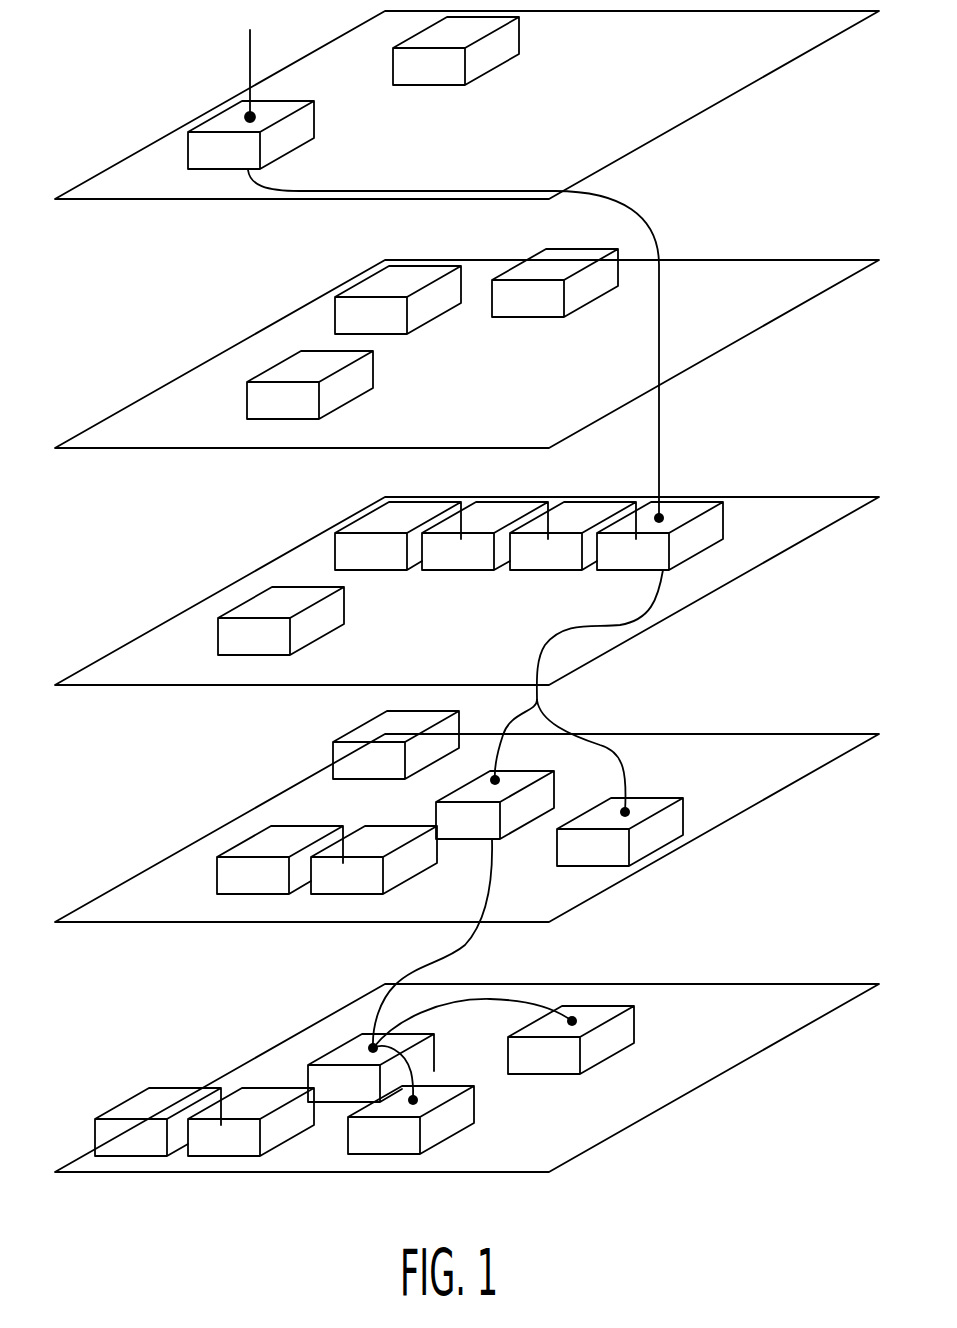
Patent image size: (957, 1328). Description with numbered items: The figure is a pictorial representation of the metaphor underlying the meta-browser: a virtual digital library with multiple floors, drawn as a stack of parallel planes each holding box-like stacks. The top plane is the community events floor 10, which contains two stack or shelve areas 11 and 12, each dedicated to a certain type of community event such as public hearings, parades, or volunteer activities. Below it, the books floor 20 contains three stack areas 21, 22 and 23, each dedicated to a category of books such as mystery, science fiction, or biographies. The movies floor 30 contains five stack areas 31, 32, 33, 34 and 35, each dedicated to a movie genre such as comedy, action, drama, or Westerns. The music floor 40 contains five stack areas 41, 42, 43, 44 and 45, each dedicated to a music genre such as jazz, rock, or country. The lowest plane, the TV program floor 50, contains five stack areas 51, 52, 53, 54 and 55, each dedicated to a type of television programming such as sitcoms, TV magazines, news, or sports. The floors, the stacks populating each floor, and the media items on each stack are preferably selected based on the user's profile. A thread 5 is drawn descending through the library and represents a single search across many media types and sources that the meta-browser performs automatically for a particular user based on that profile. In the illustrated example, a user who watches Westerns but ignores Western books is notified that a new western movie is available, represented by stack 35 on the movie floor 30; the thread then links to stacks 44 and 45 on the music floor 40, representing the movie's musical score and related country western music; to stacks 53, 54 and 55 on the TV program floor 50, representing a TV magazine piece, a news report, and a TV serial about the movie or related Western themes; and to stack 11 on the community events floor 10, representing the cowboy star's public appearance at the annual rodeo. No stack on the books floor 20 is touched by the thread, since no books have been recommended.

The thread 5 is at (248, 63).
The community events floor 10 is at (324, 205).
The stack or shelve area 11 is at (212, 162).
The stack or shelve area 12 is at (417, 78).
The books floor 20 is at (171, 451).
The stack or shelve area 21 is at (271, 412).
The stack or shelve area 22 is at (359, 327).
The stack or shelve area 23 is at (516, 310).
The movies floor 30 is at (179, 687).
The stack or shelve area 31 is at (242, 648).
The stack or shelve area 32 is at (359, 563).
The stack or shelve area 33 is at (446, 563).
The stack or shelve area 34 is at (534, 563).
The stack or shelve area 35 is at (621, 563).
The music floor 40 is at (172, 924).
The stack or shelve area 41 is at (241, 887).
The stack or shelve area 42 is at (335, 887).
The stack or shelve area 43 is at (357, 772).
The stack or shelve area 44 is at (456, 832).
The stack or shelve area 45 is at (581, 859).
The TV program floor 50 is at (252, 1176).
The stack or shelve area 51 is at (119, 1149).
The stack or shelve area 52 is at (212, 1149).
The stack or shelve area 53 is at (332, 1095).
The stack or shelve area 54 is at (372, 1147).
The stack or shelve area 55 is at (532, 1067).